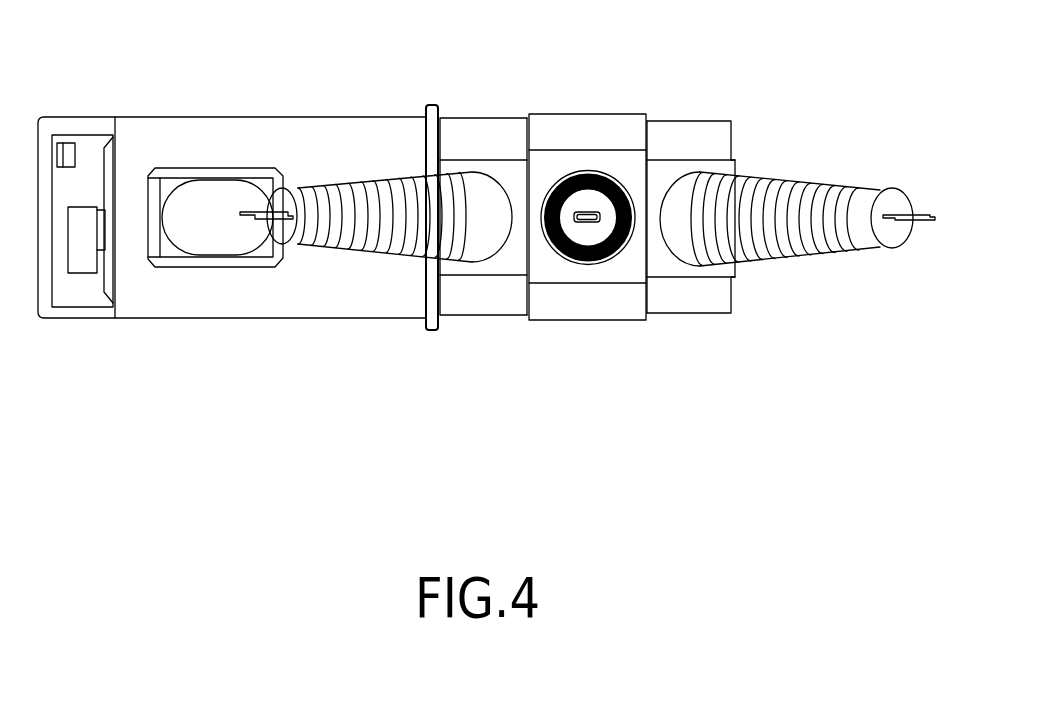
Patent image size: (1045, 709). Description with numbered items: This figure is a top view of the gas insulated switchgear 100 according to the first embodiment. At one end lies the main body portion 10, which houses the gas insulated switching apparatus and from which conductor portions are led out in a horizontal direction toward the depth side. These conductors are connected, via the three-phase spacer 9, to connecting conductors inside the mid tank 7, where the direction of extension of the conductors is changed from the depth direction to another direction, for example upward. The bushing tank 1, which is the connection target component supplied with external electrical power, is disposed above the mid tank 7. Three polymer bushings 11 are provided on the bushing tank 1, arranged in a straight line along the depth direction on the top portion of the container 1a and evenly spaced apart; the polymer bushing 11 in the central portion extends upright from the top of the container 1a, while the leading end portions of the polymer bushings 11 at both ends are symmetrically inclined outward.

The gas insulated switchgear 100 is at (798, 381).
The main body portion 10 is at (245, 318).
The three-phase spacer 9 is at (435, 330).
The polymer bushing 11 is at (383, 172).
The container 1a is at (590, 320).
The mid tank 7 is at (665, 318).
The bushing tank 1 is at (716, 318).